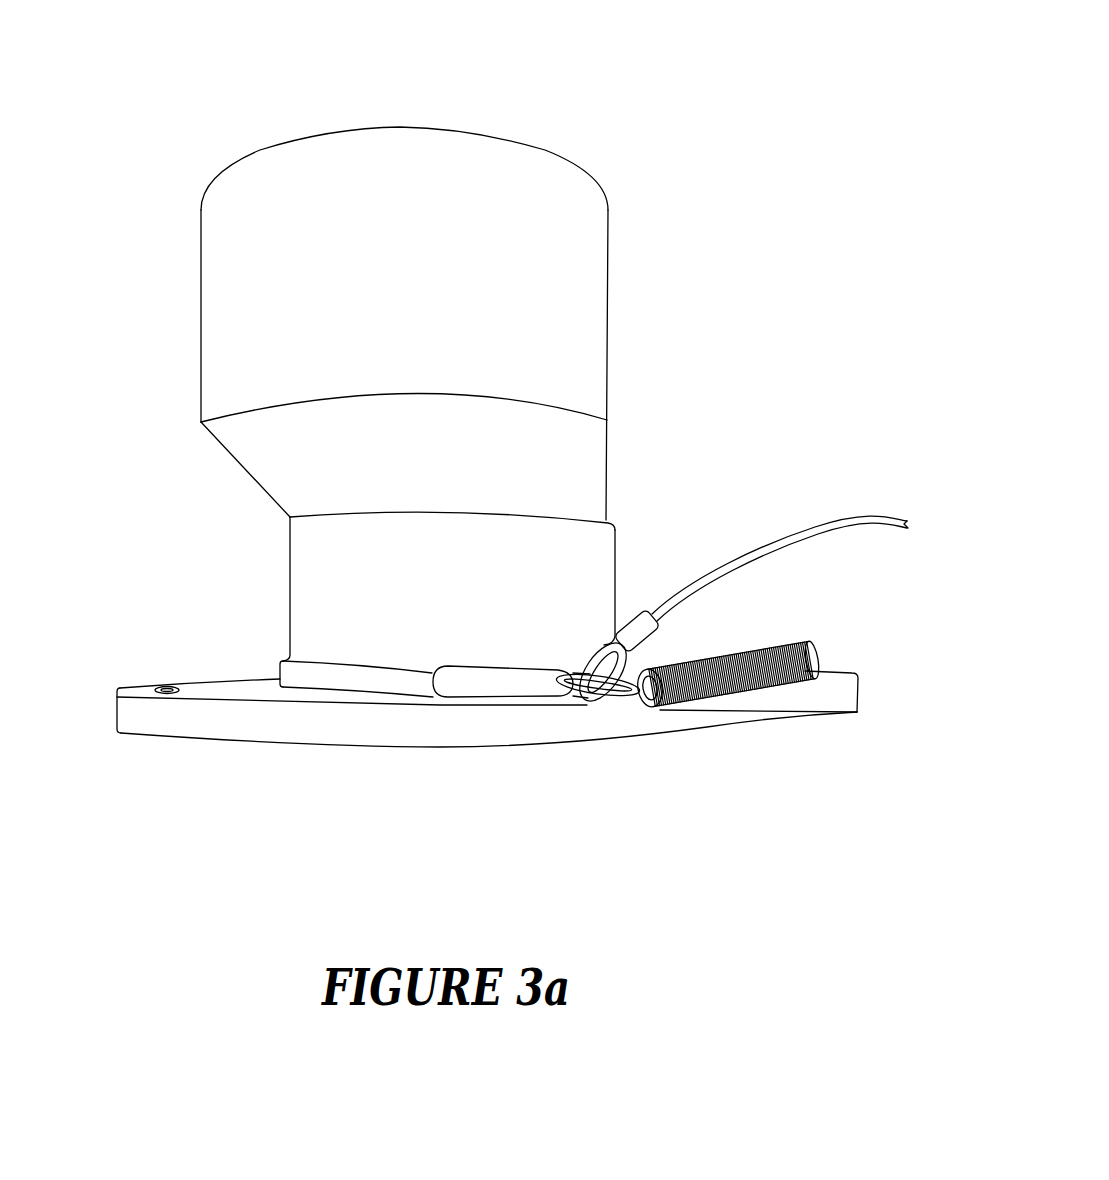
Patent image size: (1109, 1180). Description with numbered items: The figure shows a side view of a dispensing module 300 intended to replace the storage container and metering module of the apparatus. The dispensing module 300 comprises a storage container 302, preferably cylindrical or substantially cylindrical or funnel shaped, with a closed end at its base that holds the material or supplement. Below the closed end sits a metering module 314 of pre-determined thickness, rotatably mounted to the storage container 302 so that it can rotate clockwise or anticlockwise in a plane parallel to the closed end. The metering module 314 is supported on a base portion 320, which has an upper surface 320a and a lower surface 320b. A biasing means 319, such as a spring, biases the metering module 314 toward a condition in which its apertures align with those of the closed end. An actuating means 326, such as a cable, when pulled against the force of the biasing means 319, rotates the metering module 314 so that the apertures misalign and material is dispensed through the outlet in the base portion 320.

The dispensing module 300 is at (628, 97).
The storage container 302 is at (408, 394).
The metering module 314 is at (327, 678).
The biasing means 319 is at (728, 697).
The base portion 320 is at (447, 737).
The upper surface 320a is at (130, 688).
The lower surface 320b is at (323, 737).
The actuating means 326 is at (820, 518).